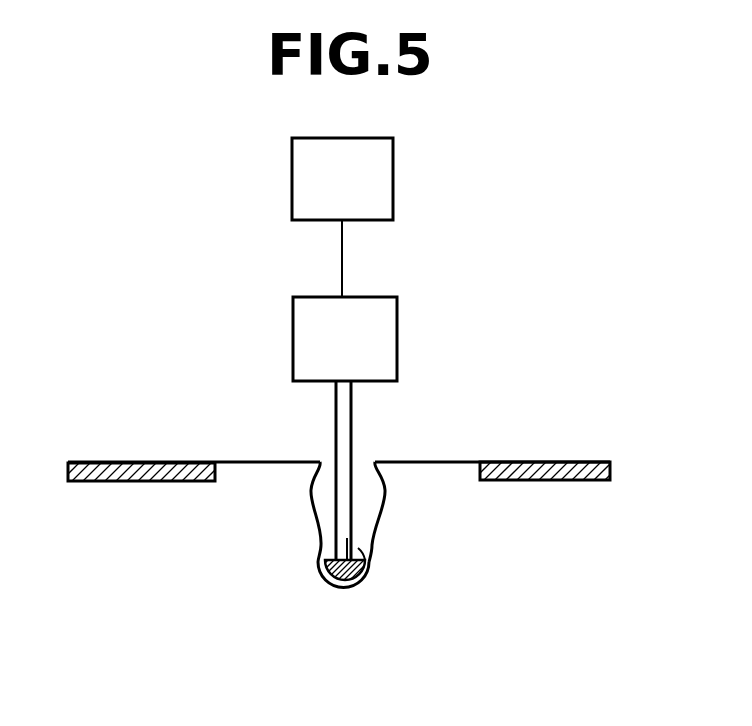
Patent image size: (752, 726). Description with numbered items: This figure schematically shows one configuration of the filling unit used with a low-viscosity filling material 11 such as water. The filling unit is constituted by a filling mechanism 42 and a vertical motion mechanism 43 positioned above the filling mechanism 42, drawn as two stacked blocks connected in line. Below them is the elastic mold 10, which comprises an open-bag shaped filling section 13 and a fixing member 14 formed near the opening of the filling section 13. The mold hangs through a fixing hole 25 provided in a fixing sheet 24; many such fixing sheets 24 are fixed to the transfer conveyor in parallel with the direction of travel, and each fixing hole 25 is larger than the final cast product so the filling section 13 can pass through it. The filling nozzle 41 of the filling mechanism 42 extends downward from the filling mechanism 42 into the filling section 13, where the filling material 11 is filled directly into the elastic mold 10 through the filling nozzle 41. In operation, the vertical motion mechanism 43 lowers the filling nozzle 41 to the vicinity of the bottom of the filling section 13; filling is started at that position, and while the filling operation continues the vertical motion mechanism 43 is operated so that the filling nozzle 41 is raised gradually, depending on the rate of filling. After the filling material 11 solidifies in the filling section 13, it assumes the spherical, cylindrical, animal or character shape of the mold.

The vertical motion mechanism 43 is at (393, 181).
The filling mechanism 42 is at (392, 338).
The fixing member 14 is at (446, 461).
The filling section 13 is at (363, 512).
The fixing hole 25 is at (220, 472).
The fixing sheet 24 is at (576, 460).
The elastic mold 10 is at (382, 577).
The filling material 11 is at (333, 586).
The filling nozzle 41 is at (357, 586).